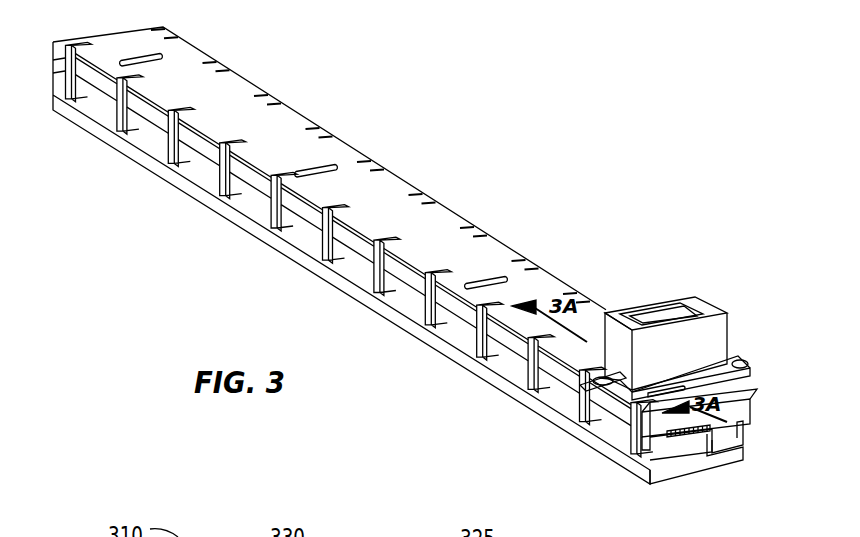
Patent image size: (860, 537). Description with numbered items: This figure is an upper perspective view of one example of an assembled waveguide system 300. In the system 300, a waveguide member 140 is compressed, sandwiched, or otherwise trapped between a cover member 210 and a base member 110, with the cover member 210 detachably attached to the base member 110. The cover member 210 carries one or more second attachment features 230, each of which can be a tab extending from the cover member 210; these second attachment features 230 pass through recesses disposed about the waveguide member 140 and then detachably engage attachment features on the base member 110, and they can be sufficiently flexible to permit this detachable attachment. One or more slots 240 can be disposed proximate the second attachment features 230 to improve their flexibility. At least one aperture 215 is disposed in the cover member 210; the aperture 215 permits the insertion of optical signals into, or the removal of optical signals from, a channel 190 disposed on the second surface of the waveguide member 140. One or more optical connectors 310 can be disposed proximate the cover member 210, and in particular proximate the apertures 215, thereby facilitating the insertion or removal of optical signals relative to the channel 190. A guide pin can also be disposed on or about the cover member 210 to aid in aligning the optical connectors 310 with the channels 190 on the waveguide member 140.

The base member 110 is at (691, 480).
The waveguide member 140 is at (713, 438).
The channel 190 is at (685, 433).
The cover member 210 is at (753, 411).
The aperture 215 is at (508, 270).
The second attachment feature 230 is at (273, 233).
The slot 240 is at (241, 153).
The assembled waveguide system 300 is at (494, 176).
The optical connector 310 is at (727, 325).